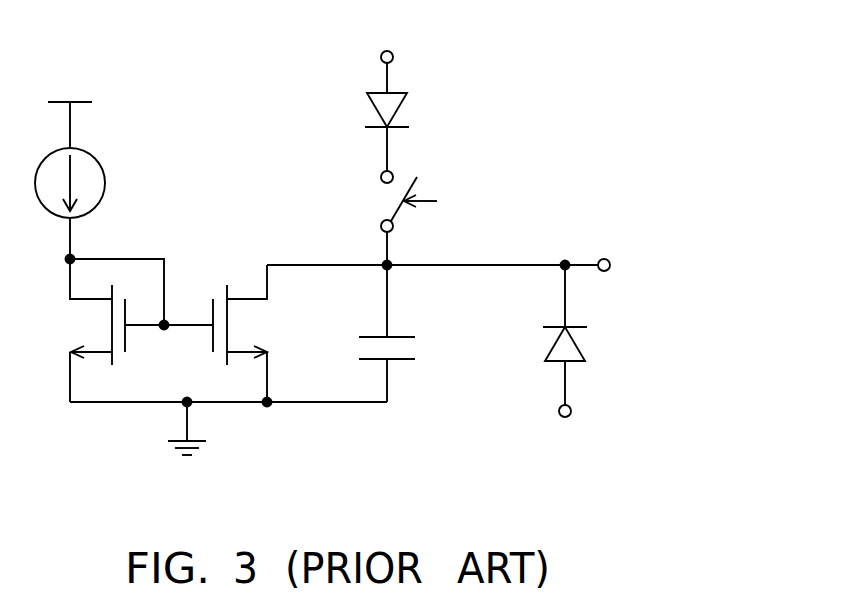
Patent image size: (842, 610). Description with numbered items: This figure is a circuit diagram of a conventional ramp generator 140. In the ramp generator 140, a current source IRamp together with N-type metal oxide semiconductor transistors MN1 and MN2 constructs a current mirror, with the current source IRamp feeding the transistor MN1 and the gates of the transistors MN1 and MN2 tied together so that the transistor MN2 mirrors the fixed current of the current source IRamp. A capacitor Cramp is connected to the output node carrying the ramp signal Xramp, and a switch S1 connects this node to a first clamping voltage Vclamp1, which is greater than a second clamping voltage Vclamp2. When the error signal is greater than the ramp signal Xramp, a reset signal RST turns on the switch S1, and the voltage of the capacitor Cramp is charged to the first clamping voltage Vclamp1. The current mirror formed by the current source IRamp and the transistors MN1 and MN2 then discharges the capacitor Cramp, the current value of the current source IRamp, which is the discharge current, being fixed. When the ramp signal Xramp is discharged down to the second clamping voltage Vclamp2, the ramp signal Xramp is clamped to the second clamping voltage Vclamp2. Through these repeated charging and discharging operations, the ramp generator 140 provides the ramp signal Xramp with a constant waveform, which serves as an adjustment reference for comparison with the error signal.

The ramp generator 140 is at (367, 267).
The current source IRamp is at (106, 183).
The N-type MOS transistor MN1 is at (78, 330).
The N-type MOS transistor MN2 is at (255, 336).
The switch S1 is at (384, 218).
The reset signal RST is at (446, 202).
The capacitor Cramp is at (428, 333).
The ramp signal Xramp is at (650, 263).
The first clamping voltage Vclamp1 is at (388, 92).
The second clamping voltage Vclamp2 is at (569, 364).